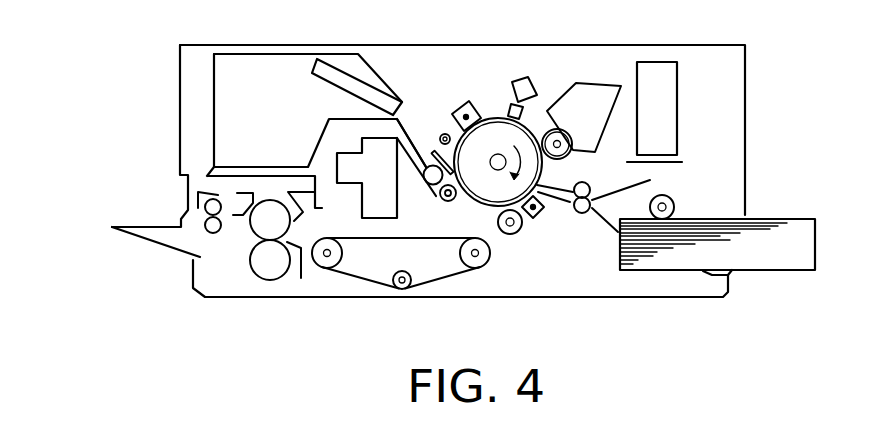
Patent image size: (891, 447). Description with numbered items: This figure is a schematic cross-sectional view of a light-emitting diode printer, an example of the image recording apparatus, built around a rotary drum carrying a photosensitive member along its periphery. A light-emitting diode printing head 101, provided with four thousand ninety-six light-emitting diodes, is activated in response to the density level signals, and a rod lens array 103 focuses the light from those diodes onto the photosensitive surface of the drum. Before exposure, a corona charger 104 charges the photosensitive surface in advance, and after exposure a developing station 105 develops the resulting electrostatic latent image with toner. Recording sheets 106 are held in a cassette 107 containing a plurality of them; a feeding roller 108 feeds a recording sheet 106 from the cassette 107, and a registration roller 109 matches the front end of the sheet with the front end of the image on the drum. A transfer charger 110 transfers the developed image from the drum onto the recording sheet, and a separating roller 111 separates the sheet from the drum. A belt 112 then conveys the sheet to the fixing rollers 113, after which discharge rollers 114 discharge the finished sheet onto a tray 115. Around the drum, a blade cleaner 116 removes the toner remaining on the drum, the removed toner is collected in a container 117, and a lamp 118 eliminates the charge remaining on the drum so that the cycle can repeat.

The printing head 101 is at (530, 80).
The rod lens array 103 is at (511, 102).
The corona charger 104 is at (462, 105).
The developing station 105 is at (581, 121).
The recording sheets 106 is at (802, 233).
The cassette 107 is at (817, 258).
The feeding roller 108 is at (673, 197).
The registration roller 109 is at (587, 215).
The transfer charger 110 is at (545, 213).
The separating roller 111 is at (507, 237).
The belt 112 is at (440, 280).
The fixing rollers 113 is at (270, 282).
The discharge rollers 114 is at (215, 235).
The tray 115 is at (150, 240).
The blade cleaner 116 is at (435, 158).
The container 117 is at (356, 198).
The lamp 118 is at (442, 133).